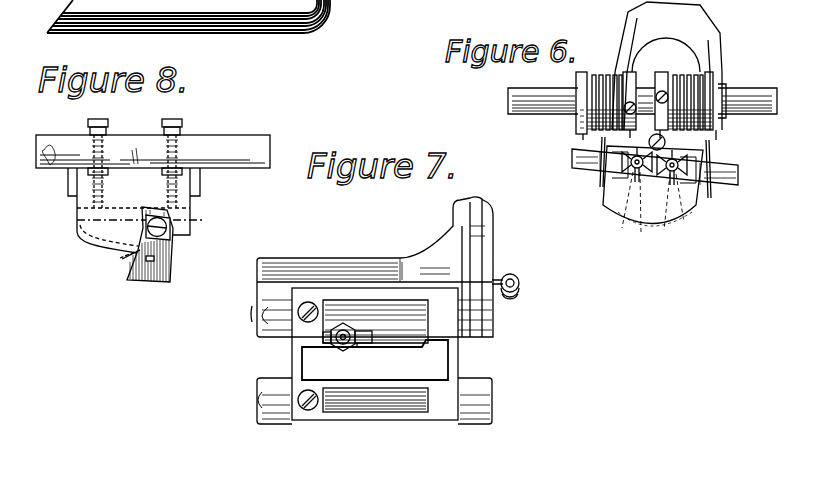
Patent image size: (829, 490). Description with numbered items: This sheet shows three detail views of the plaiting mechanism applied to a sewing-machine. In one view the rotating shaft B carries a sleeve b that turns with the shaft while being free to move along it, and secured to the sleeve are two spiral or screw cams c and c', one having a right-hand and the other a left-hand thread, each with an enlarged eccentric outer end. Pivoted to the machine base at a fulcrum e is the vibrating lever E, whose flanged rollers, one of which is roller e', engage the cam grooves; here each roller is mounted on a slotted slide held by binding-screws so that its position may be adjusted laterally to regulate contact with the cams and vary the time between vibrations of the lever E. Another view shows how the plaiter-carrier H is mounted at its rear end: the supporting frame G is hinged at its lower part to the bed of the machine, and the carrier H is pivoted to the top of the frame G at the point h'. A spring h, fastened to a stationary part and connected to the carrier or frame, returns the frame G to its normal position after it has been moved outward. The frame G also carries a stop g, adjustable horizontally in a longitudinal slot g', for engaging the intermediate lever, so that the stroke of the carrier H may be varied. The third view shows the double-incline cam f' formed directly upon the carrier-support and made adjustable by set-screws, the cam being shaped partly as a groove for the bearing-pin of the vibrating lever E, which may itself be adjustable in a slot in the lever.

In FIG. 8, the plaiter-carrier H is at (153, 151).
In FIG. 7, the plaiter-carrier H is at (375, 267).
In FIG. 8, the vibrating lever E is at (153, 244).
In FIG. 6, the vibrating lever E is at (667, 66).
In FIG. 8, the double-incline cam f' is at (125, 233).
In FIG. 7, the carrier-support frame G is at (375, 354).
In FIG. 7, the stop g is at (334, 352).
In FIG. 7, the longitudinal slot g' is at (370, 356).
In FIG. 7, the spring h is at (519, 286).
In FIG. 7, the pivot h' is at (372, 312).
In FIG. 6, the rotating shaft B is at (642, 98).
In FIG. 6, the sleeve b is at (727, 83).
In FIG. 6, the spiral cam c is at (606, 95).
In FIG. 6, the spiral cam c' is at (684, 92).
In FIG. 6, the pivot e is at (655, 162).
In FIG. 6, the flanged roller e' is at (715, 170).